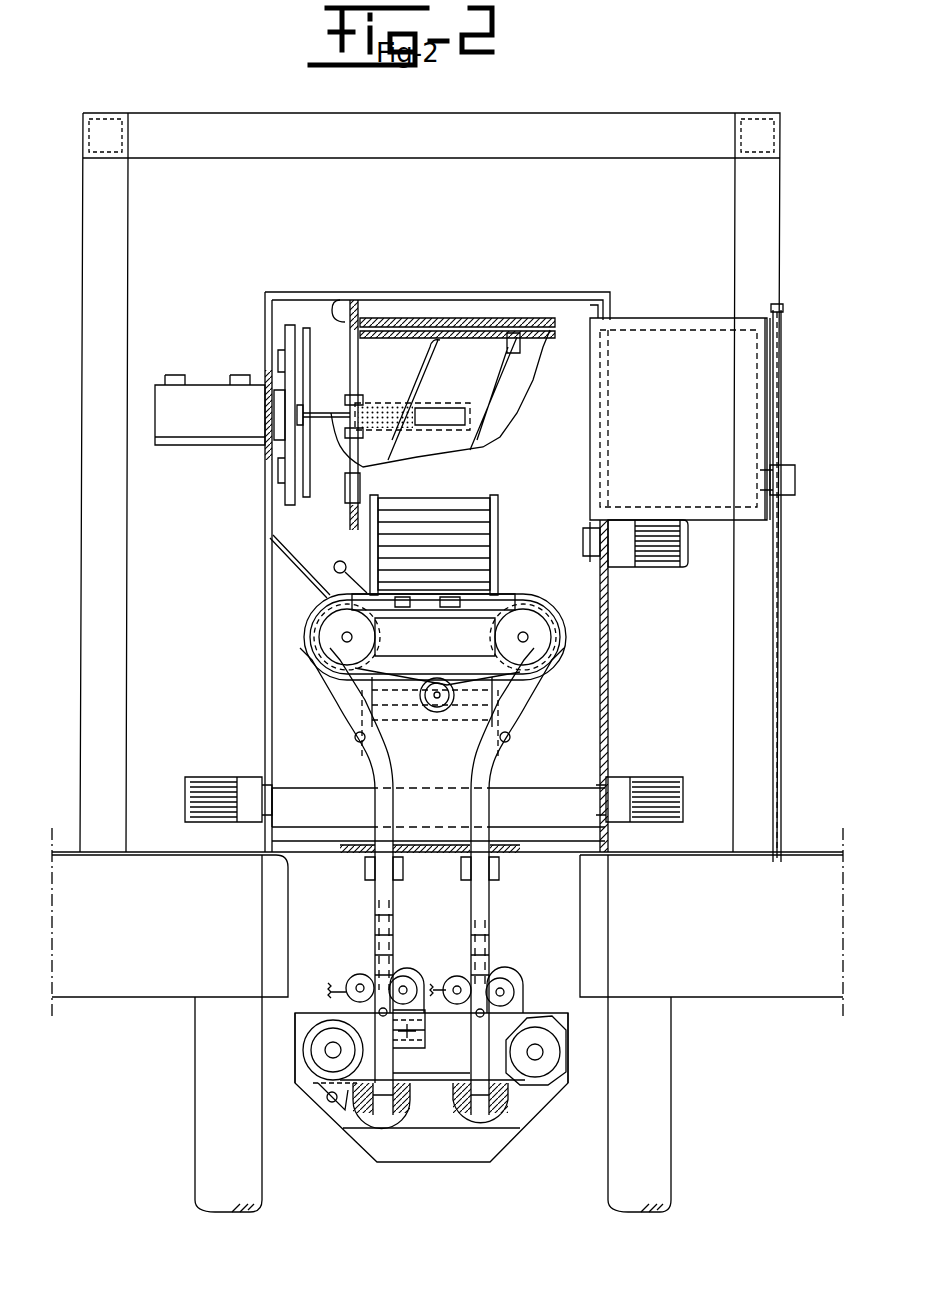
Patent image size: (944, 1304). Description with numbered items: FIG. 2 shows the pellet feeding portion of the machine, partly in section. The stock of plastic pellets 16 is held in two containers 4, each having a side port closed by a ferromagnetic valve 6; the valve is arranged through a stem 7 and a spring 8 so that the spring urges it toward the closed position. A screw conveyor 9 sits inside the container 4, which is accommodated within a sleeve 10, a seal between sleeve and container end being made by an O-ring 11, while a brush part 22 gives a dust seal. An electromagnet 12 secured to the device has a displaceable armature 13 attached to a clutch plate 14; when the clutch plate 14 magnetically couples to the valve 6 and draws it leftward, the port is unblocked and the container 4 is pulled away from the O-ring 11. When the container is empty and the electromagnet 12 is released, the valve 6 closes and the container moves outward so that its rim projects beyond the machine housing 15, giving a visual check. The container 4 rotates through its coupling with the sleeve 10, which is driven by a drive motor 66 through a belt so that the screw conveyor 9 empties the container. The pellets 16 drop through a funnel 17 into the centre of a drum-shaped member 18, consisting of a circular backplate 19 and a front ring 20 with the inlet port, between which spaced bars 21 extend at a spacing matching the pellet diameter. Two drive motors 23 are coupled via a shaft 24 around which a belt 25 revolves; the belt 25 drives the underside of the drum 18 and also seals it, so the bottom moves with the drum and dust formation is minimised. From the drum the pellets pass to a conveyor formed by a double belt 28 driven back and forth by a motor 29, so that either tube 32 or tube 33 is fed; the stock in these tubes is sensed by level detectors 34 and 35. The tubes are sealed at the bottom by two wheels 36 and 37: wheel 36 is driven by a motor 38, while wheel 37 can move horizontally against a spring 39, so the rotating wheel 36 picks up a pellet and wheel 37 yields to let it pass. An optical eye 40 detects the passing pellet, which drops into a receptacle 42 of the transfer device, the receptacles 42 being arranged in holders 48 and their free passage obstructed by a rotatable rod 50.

The container 4 is at (532, 353).
The valve 6 is at (307, 327).
The stem 7 is at (331, 413).
The spring 8 is at (392, 402).
The screw conveyor 9 is at (440, 345).
The sleeve 10 is at (432, 345).
The O-ring 11 is at (753, 318).
The electromagnet 12 is at (193, 400).
The displaceable armature 13 is at (262, 410).
The clutch plate 14 is at (290, 323).
The machine housing 15 is at (780, 558).
The pellets 16 is at (335, 572).
The funnel 17 is at (283, 555).
The drum-shaped member 18 is at (522, 570).
The circular backplate 19 is at (560, 635).
The front ring 20 is at (370, 542).
The spaced bars 21 is at (483, 540).
The brush part 22 is at (356, 298).
The drive motors 23 is at (208, 790).
The shaft 24 is at (573, 822).
The belt 25 is at (447, 763).
The double belt 28 is at (460, 684).
The motor 29 is at (378, 692).
The tube 32 is at (447, 685).
The tube 33 is at (367, 767).
The level detector 34 is at (511, 738).
The level detector 35 is at (354, 737).
The wheel 36 is at (405, 975).
The wheel 37 is at (360, 975).
The motor 38 is at (428, 1013).
The spring 39 is at (342, 977).
The optical eye 40 is at (380, 1012).
The receptacle 42 is at (420, 1110).
The holders 48 is at (368, 1108).
The rotatable rod 50 is at (402, 1105).
The drive motor 66 is at (683, 552).